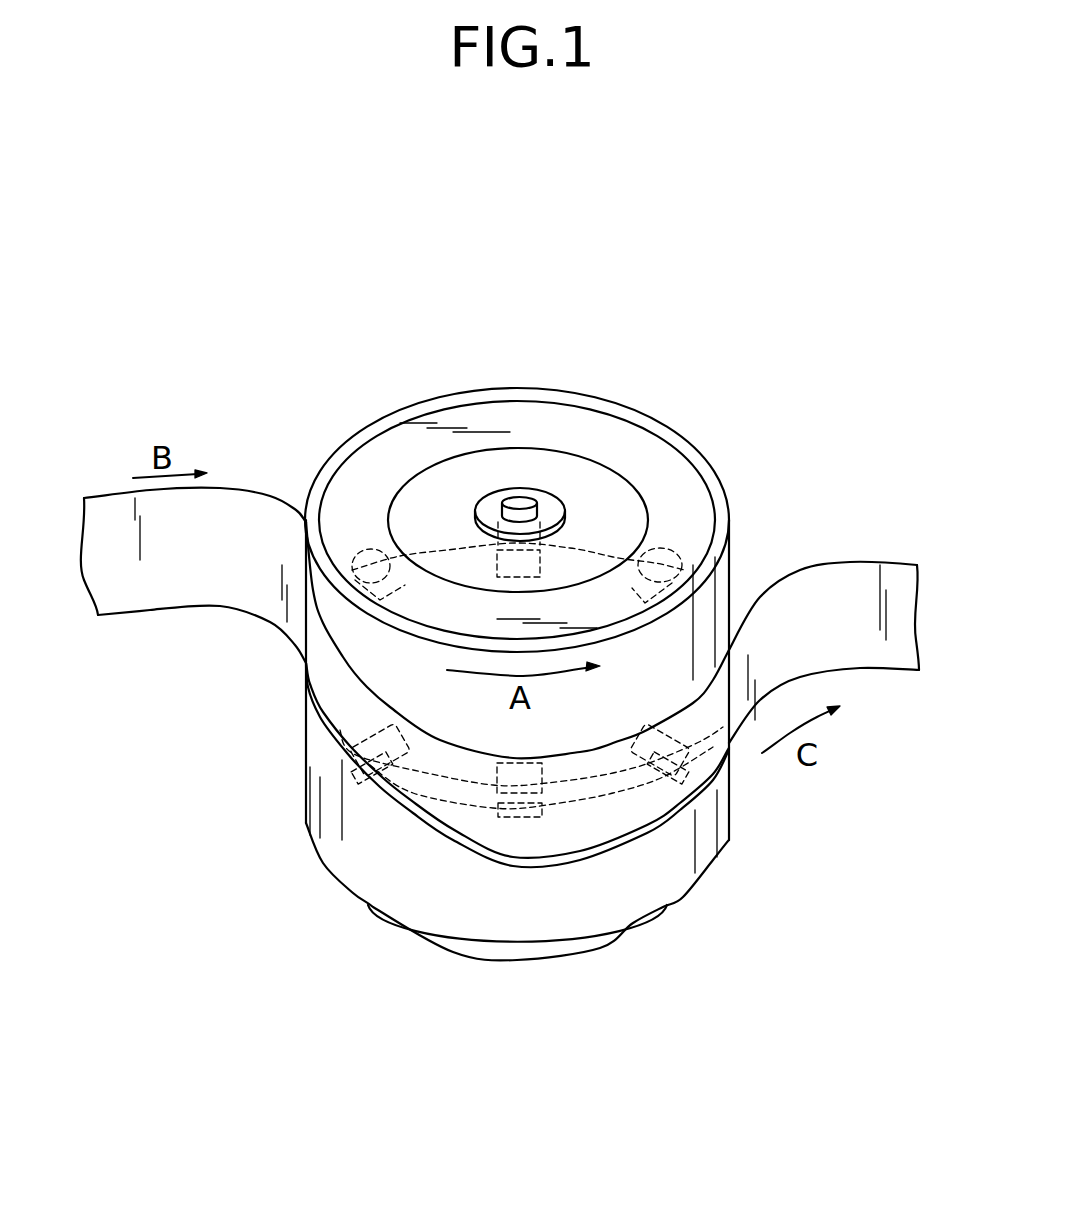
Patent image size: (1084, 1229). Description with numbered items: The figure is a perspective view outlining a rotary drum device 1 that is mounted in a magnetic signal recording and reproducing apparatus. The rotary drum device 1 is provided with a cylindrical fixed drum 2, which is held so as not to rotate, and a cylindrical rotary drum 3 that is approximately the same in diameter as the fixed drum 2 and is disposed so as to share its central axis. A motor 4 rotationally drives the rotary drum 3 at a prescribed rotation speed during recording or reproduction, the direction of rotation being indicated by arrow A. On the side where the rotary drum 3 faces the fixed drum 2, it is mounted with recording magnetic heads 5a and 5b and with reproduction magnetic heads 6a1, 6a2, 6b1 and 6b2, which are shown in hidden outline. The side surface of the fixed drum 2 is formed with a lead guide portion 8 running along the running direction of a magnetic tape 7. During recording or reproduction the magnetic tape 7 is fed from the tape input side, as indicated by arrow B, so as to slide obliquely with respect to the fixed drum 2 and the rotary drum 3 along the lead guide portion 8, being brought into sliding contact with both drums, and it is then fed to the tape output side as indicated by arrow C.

The rotary drum device 1 is at (812, 393).
The fixed drum 2 is at (632, 892).
The rotary drum 3 is at (722, 567).
The motor 4 is at (433, 938).
The recording magnetic head 5a is at (518, 795).
The recording magnetic head 5b is at (567, 543).
The reproduction magnetic head 6a1 is at (345, 760).
The reproduction magnetic head 6a2 is at (667, 547).
The reproduction magnetic head 6b1 is at (727, 787).
The reproduction magnetic head 6b2 is at (378, 560).
The magnetic tape 7 is at (907, 618).
The lead guide portion 8 is at (370, 800).